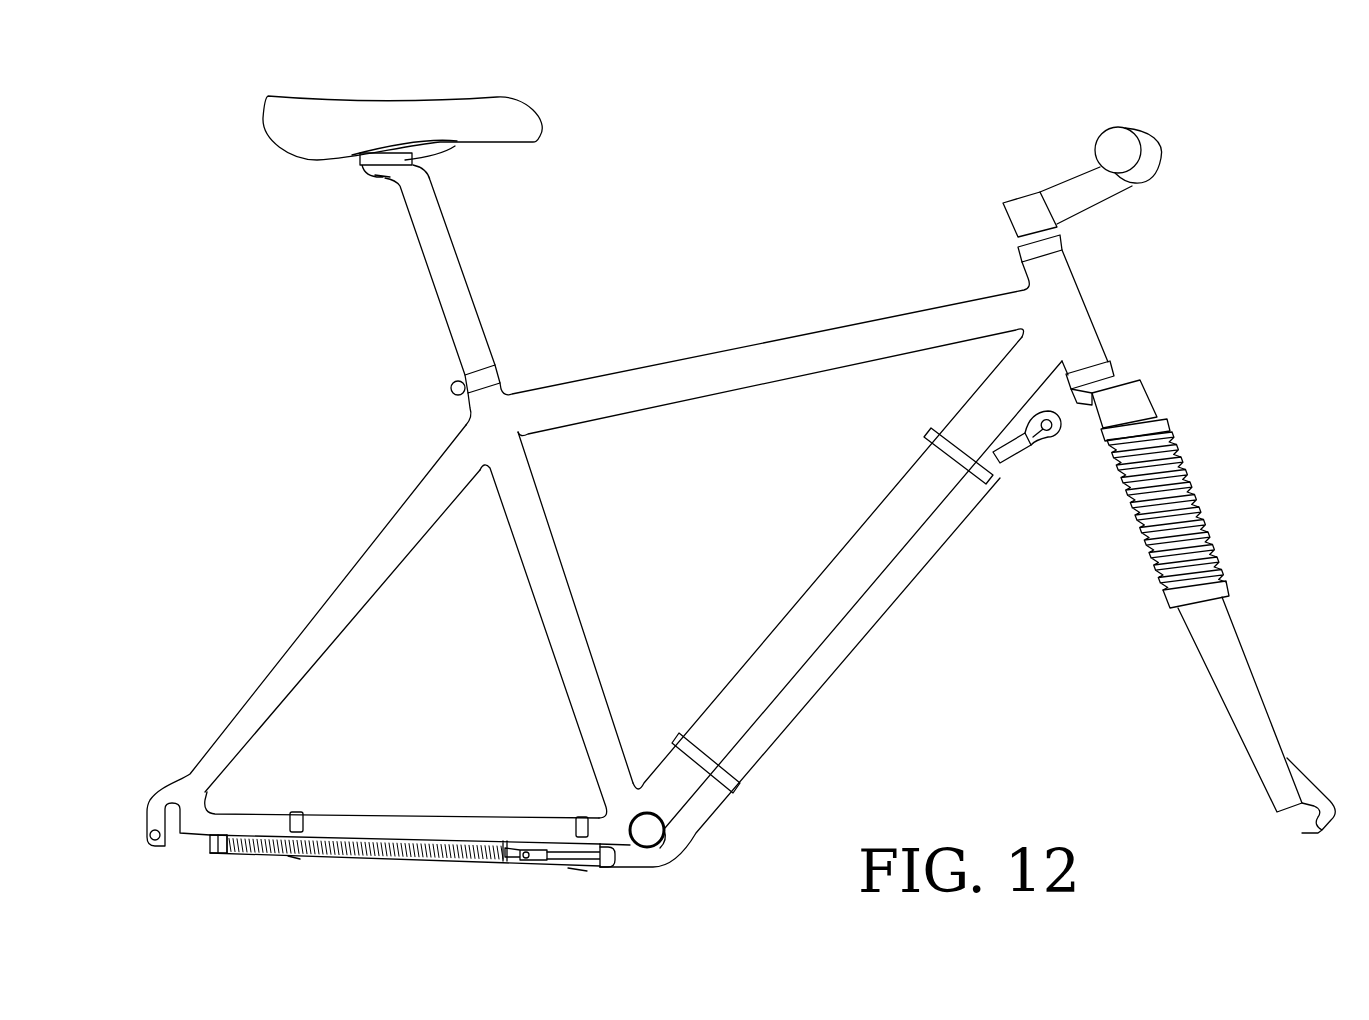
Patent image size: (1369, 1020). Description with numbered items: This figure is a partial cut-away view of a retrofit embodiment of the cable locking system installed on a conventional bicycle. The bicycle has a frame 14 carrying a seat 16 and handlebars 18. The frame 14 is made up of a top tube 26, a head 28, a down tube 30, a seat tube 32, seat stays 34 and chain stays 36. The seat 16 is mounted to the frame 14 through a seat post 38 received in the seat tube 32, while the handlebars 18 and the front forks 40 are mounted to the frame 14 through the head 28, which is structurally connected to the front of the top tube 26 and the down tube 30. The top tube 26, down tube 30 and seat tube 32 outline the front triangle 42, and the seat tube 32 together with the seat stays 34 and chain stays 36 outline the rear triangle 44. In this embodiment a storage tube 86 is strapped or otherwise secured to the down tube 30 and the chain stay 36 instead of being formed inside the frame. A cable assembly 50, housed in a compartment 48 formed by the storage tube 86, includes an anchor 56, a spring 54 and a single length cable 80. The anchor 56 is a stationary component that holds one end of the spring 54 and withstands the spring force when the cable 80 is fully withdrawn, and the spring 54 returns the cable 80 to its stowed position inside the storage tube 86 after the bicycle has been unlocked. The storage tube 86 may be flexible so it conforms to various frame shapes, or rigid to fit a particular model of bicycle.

The frame 14 is at (636, 551).
The seat 16 is at (385, 110).
The handlebars 18 is at (1155, 158).
The top tube 26 is at (682, 367).
The head 28 is at (1064, 262).
The down tube 30 is at (800, 613).
The seat tube 32 is at (555, 640).
The seat stays 34 is at (348, 582).
The chain stays 36 is at (440, 816).
The seat post 38 is at (461, 259).
The front forks 40 is at (1224, 712).
The front triangle 42 is at (777, 405).
The rear triangle 44 is at (318, 688).
The compartment 48 is at (592, 864).
The cable assembly 50 is at (512, 878).
The spring 54 is at (408, 856).
The anchor 56 is at (212, 855).
The single length cable 80 is at (1047, 440).
The storage tube 86 is at (840, 662).